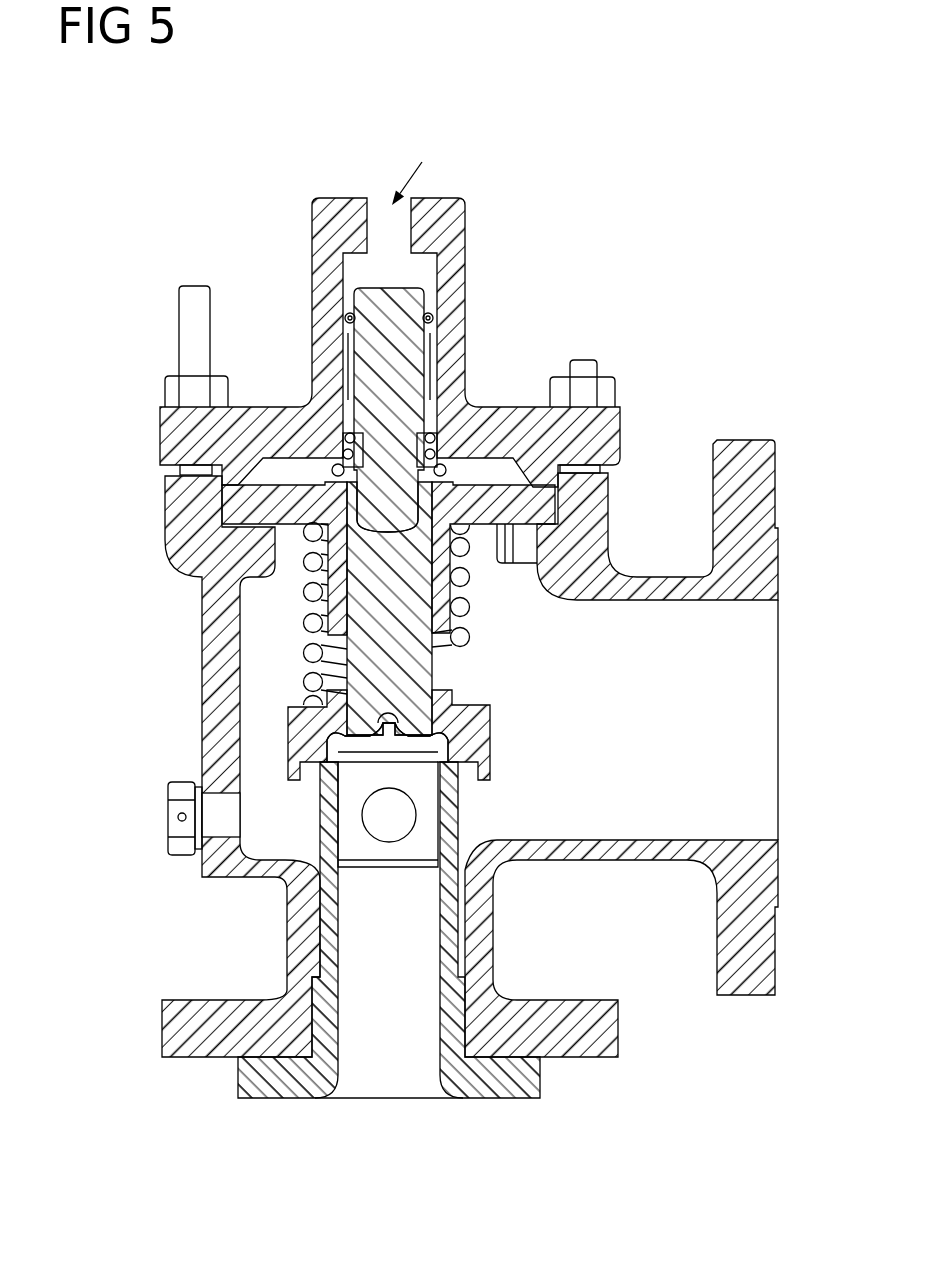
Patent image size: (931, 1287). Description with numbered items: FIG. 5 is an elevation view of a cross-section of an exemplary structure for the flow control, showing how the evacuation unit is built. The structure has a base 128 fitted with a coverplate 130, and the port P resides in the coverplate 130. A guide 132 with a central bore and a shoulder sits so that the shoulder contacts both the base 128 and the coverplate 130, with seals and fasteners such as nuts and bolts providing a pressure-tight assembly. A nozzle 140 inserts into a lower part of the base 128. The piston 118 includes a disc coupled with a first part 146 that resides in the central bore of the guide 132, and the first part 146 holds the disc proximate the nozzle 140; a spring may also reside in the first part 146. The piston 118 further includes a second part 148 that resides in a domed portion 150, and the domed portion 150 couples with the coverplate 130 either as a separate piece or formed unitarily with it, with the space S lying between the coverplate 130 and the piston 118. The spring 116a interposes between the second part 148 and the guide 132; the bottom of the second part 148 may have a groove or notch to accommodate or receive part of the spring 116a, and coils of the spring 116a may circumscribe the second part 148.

The domed portion 150 is at (513, 242).
The second part 148 is at (388, 370).
The spring 116a is at (445, 447).
The coverplate 130 is at (597, 440).
The base 128 is at (747, 458).
The guide 132 is at (532, 508).
The first part 146 is at (403, 663).
The nozzle 140 is at (447, 828).
The piston 118 is at (266, 615).